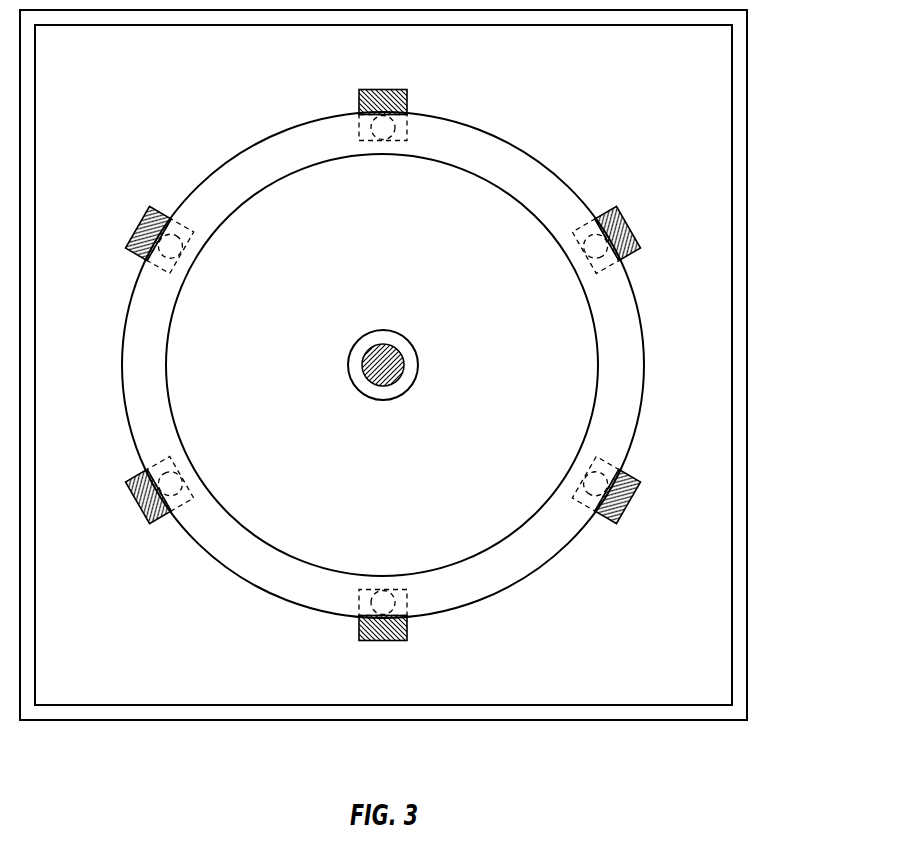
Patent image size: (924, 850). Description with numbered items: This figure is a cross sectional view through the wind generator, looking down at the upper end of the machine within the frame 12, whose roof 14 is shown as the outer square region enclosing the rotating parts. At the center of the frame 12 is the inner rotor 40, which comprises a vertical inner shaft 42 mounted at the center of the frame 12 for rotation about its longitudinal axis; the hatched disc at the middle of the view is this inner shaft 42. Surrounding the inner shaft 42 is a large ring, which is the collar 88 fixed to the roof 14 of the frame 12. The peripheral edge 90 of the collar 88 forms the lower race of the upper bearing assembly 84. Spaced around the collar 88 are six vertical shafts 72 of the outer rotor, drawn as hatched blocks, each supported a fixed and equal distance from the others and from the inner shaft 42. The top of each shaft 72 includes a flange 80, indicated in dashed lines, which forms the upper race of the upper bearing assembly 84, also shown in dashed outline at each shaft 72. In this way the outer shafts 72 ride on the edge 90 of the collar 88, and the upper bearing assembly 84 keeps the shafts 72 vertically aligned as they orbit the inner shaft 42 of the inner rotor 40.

The frame 12 is at (749, 591).
The roof 14 is at (712, 676).
The inner rotor 40 is at (396, 362).
The inner shaft 42 is at (382, 370).
The vertical shafts 72 is at (408, 101).
The flange 80 is at (356, 112).
The upper bearing assembly 84 is at (410, 114).
The collar 88 is at (510, 152).
The peripheral edge 90 is at (596, 374).